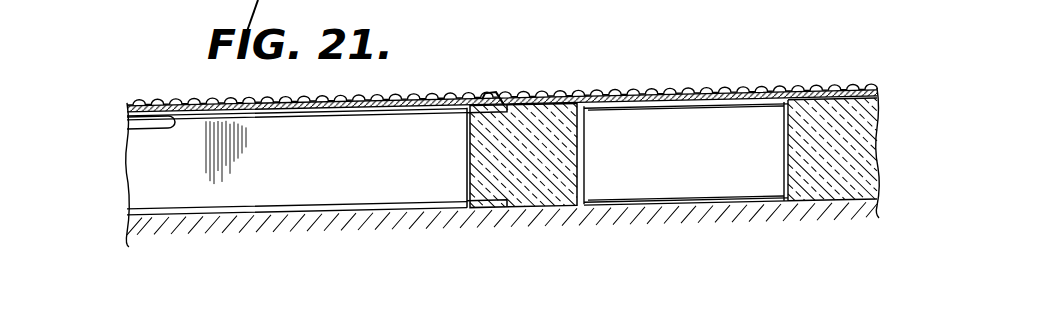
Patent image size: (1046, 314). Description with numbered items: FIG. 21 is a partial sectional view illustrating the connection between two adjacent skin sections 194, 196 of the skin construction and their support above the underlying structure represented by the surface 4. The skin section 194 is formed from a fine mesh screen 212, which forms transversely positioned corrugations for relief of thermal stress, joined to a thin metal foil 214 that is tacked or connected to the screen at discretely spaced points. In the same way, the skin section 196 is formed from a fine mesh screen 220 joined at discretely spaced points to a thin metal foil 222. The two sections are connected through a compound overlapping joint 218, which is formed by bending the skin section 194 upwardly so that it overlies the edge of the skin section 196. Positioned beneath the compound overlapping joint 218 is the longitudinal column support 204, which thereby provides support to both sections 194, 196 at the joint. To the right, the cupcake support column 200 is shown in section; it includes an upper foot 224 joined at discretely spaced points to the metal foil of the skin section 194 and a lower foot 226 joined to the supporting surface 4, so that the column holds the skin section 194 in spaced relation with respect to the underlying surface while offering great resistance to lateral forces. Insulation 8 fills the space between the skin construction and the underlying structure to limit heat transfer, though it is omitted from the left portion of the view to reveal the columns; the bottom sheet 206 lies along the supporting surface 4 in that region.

The skin section 196 is at (176, 95).
The fine mesh screen 212 is at (718, 95).
The fine mesh screen 220 is at (318, 100).
The thin metal foil 222 is at (127, 129).
The bottom sheet 206 is at (172, 192).
The surface 4 is at (291, 204).
The longitudinal column support 204 is at (466, 160).
The insulation 8 is at (540, 186).
The compound overlapping joint 218 is at (490, 92).
The upper foot 224 is at (588, 114).
The lower foot 226 is at (593, 200).
The cupcake support column 200 is at (797, 170).
The thin metal foil 214 is at (821, 100).
The skin section 194 is at (788, 82).